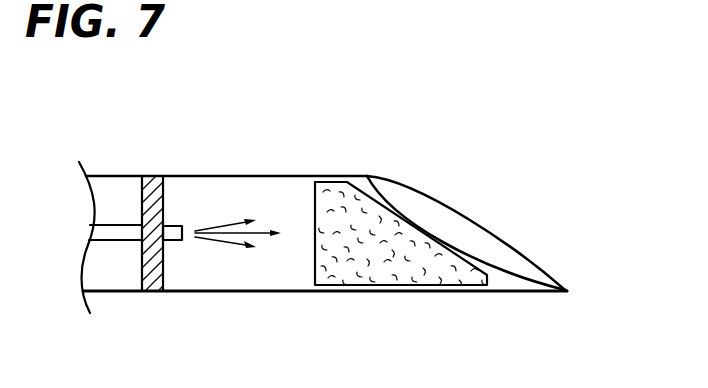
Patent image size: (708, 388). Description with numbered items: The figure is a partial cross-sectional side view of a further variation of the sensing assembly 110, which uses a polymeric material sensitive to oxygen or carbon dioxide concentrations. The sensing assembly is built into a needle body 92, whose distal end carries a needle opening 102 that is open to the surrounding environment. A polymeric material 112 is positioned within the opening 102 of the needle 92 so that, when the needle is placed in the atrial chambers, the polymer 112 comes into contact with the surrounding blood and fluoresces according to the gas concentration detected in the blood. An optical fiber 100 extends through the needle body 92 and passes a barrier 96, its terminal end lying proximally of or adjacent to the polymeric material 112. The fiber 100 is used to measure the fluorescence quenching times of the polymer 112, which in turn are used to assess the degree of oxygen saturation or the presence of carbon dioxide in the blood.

The sensing assembly 110 is at (280, 152).
The optical fiber 100 is at (107, 242).
The barrier 96 is at (145, 293).
The polymeric material 112 is at (343, 272).
The needle body 92 is at (482, 293).
The needle opening 102 is at (548, 268).